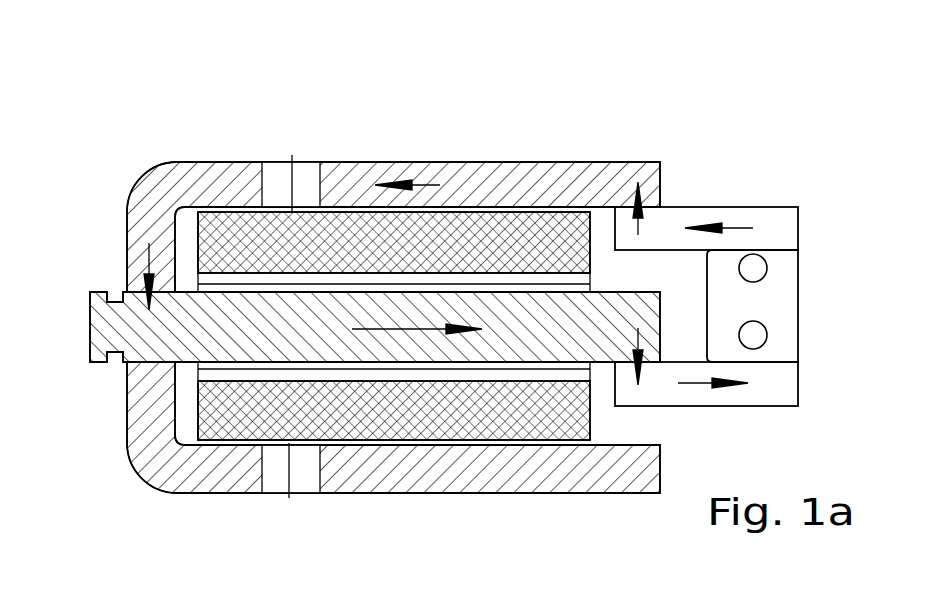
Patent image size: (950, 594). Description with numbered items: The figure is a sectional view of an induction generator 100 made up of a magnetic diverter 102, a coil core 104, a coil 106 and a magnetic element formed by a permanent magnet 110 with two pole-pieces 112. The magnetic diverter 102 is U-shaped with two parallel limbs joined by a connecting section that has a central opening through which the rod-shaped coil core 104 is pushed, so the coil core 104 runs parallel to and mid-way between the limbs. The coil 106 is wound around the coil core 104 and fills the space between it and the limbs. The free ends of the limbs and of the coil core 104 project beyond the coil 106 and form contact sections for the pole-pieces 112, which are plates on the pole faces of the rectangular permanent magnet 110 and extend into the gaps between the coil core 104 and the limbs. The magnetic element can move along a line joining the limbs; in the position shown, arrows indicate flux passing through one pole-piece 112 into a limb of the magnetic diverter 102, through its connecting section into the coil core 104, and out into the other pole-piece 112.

The induction generator 100 is at (455, 259).
The magnetic diverter 102 is at (458, 188).
The coil core 104 is at (193, 320).
The coil 106 is at (312, 240).
The permanent magnet 110 is at (780, 305).
The pole-pieces 112 is at (678, 372).